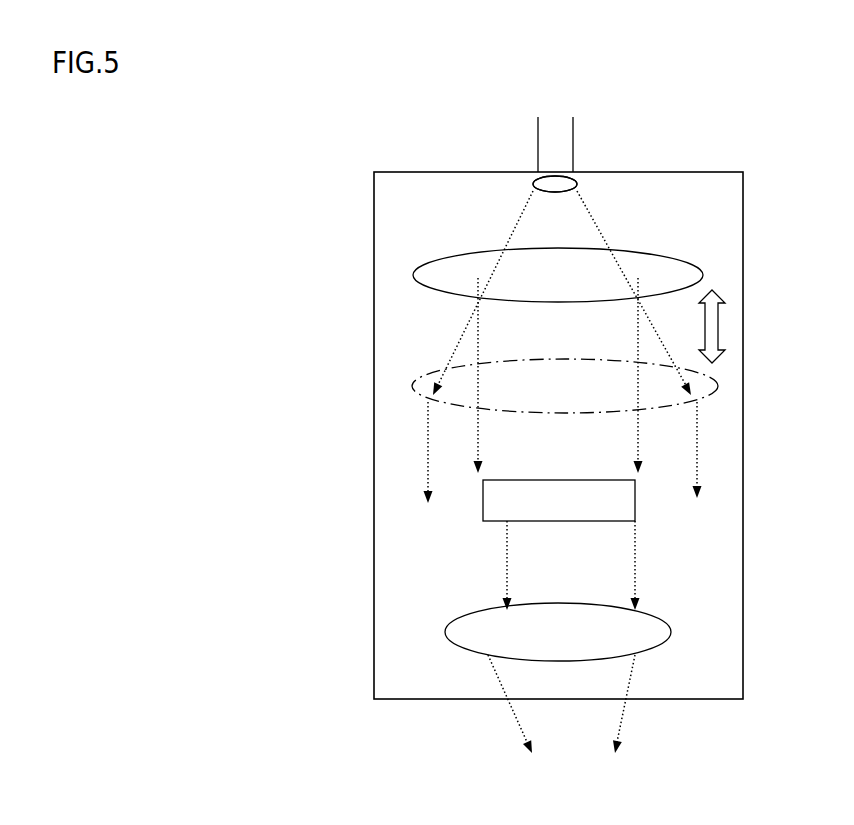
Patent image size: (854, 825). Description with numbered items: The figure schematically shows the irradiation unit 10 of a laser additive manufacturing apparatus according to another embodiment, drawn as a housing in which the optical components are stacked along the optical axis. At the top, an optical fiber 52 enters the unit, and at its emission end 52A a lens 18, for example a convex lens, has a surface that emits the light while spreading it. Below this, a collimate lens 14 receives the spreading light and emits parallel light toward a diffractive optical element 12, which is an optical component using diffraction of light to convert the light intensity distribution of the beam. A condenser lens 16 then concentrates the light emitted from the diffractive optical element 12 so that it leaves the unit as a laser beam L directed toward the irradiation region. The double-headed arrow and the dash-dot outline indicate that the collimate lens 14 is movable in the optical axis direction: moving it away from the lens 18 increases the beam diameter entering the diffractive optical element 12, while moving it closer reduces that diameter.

The irradiation unit 10 is at (375, 390).
The diffractive optical element 12 is at (492, 503).
The collimate lens 14 is at (452, 381).
The condenser lens 16 is at (477, 632).
The lens 18 is at (552, 183).
The optical fiber 52 is at (548, 133).
The emission end 52A is at (578, 184).
The laser beam L is at (506, 731).